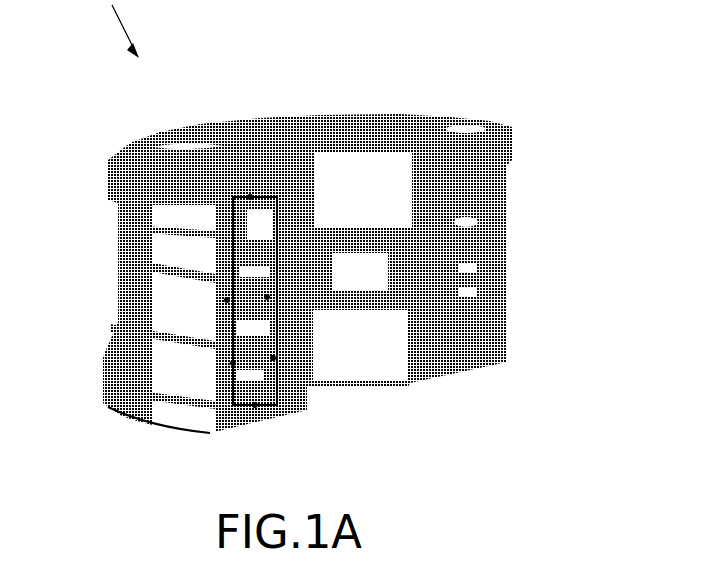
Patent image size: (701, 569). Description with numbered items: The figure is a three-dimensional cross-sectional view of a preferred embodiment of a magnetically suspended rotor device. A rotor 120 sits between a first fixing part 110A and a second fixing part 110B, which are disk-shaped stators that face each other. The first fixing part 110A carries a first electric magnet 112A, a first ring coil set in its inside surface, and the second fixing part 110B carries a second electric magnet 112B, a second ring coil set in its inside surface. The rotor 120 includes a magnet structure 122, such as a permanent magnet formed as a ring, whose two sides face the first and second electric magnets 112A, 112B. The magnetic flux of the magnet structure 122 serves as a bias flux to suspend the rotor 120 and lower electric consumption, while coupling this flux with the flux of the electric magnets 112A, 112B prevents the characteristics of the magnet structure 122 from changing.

The first fixing part 110A is at (133, 230).
The second fixing part 110B is at (133, 352).
The first electric magnet 112A is at (233, 200).
The second electric magnet 112B is at (465, 315).
The rotor 120 is at (400, 257).
The magnet structure 122 is at (467, 255).